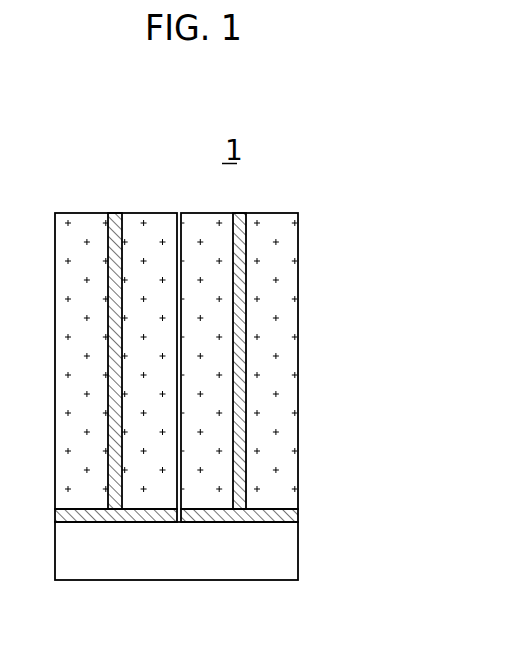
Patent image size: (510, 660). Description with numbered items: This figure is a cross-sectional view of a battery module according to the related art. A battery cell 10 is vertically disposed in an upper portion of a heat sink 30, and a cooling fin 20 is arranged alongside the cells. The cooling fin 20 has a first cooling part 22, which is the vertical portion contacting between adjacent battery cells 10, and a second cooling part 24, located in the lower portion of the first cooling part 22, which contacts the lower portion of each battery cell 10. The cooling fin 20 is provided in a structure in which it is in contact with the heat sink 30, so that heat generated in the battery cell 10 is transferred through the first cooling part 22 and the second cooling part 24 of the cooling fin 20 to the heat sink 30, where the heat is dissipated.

The battery cell 10 is at (275, 297).
The cooling fin 20 is at (243, 367).
The first cooling part 22 is at (243, 388).
The second cooling part 24 is at (217, 486).
The heat sink 30 is at (276, 553).